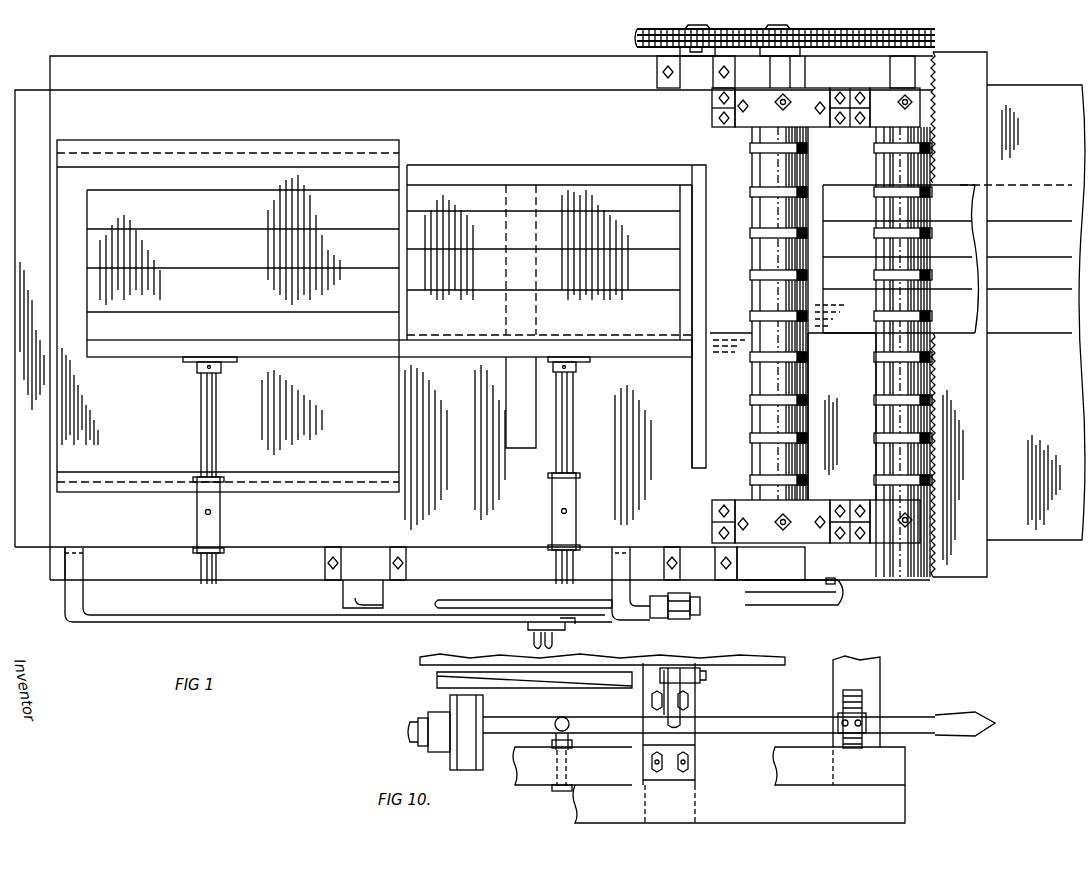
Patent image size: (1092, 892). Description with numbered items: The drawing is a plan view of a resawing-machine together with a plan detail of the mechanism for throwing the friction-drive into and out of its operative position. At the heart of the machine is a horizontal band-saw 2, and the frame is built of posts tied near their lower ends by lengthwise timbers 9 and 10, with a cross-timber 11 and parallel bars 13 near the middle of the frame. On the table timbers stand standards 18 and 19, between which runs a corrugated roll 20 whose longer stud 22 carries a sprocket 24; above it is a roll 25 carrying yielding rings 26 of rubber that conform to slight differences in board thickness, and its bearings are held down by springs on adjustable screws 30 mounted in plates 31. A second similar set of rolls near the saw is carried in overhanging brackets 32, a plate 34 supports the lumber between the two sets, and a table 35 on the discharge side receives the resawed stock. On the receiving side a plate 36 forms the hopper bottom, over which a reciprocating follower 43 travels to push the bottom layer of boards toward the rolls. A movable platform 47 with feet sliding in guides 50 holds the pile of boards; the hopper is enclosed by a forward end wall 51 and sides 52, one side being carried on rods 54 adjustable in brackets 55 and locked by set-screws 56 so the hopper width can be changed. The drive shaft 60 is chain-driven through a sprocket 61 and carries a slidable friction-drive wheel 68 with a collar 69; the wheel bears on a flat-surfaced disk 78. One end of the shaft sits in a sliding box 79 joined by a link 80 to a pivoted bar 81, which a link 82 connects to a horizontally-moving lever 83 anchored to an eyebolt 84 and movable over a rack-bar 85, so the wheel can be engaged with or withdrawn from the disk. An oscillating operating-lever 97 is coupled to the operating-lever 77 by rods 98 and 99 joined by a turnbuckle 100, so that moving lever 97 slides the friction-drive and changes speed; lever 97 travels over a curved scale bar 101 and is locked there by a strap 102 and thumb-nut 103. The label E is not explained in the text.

In FIG. 1, the horizontal band-saw 2 is at (959, 314).
In FIG. 1, the timber 9 is at (252, 576).
In FIG. 1, the timber 10 is at (322, 58).
In FIG. 10, the timber 10 is at (718, 788).
In FIG. 10, the cross-timber 11 is at (880, 682).
In FIG. 10, the parallel bars 13 is at (734, 660).
In FIG. 1, the standard 18 is at (712, 112).
In FIG. 1, the standard 19 is at (840, 128).
In FIG. 1, the corrugated roll 20 is at (808, 170).
In FIG. 1, the stud 22 is at (790, 78).
In FIG. 1, the sprocket 24 is at (798, 30).
In FIG. 1, the roll 25 is at (812, 380).
In FIG. 1, the yielding rings 26 is at (808, 190).
In FIG. 1, the adjustable screws 30 is at (791, 102).
In FIG. 1, the plates 31 is at (782, 334).
In FIG. 1, the overhanging brackets 32 is at (893, 121).
In FIG. 1, the plate 34 is at (842, 402).
In FIG. 1, the table 35 is at (1022, 312).
In FIG. 1, the plate 36 is at (474, 318).
In FIG. 1, the reciprocating follower 43 is at (512, 397).
In FIG. 1, the movable hopper, platform, or table 47 is at (393, 448).
In FIG. 1, the guides 50 is at (152, 145).
In FIG. 1, the forward end or wall of the hopper 51 is at (692, 237).
In FIG. 1, the sides of the hopper 52 is at (506, 170).
In FIG. 1, the rods 54 is at (218, 410).
In FIG. 1, the brackets 55 is at (221, 517).
In FIG. 1, the set-screws 56 is at (205, 513).
In FIG. 10, the shaft 60 is at (412, 740).
In FIG. 1, the sprocket 61 is at (690, 30).
In FIG. 10, the friction-drive wheel 68 is at (462, 704).
In FIG. 10, the collar 69 is at (438, 718).
In FIG. 1, the operating-lever 77 is at (828, 580).
In FIG. 10, the flat-surfaced disk 78 is at (540, 690).
In FIG. 10, the sliding box 79 is at (696, 748).
In FIG. 10, the link 80 is at (664, 688).
In FIG. 10, the bar 81 is at (706, 676).
In FIG. 10, the link 82 is at (700, 698).
In FIG. 10, the horizontally-moving lever 83 is at (782, 722).
In FIG. 10, the eyebolt 84 is at (566, 722).
In FIG. 10, the rack-bar 85 is at (858, 702).
In FIG. 1, the oscillating operating-lever 97 is at (415, 610).
In FIG. 1, the rod 98 is at (795, 606).
In FIG. 1, the rod 99 is at (520, 605).
In FIG. 1, the turnbuckle 100 is at (668, 614).
In FIG. 1, the curved bar 101 is at (285, 623).
In FIG. 1, the strap 102 is at (532, 628).
In FIG. 1, the screw and thumb-nut 103 is at (553, 640).
In FIG. 10, the block E is at (897, 768).